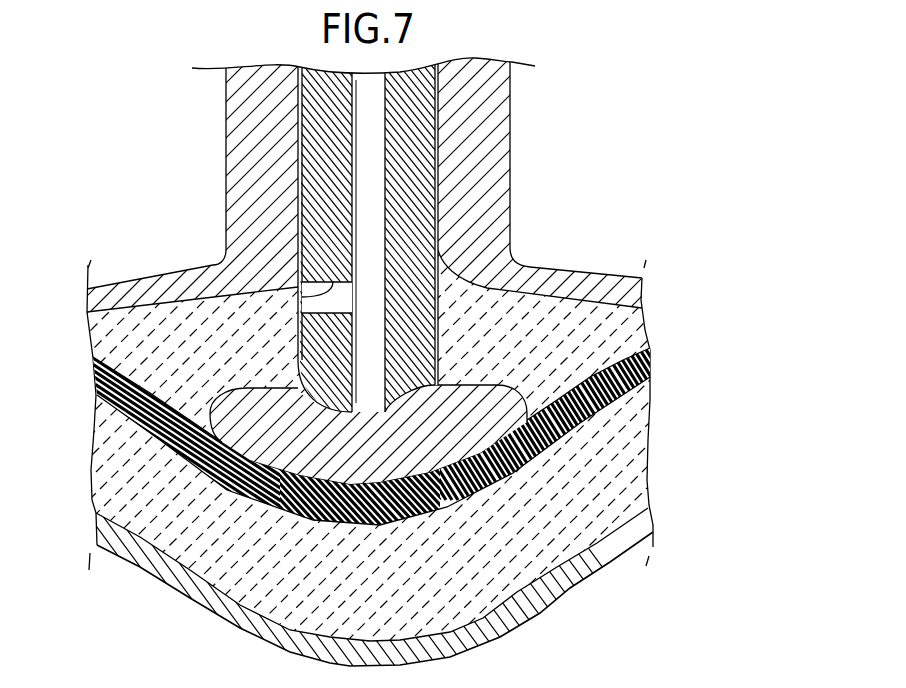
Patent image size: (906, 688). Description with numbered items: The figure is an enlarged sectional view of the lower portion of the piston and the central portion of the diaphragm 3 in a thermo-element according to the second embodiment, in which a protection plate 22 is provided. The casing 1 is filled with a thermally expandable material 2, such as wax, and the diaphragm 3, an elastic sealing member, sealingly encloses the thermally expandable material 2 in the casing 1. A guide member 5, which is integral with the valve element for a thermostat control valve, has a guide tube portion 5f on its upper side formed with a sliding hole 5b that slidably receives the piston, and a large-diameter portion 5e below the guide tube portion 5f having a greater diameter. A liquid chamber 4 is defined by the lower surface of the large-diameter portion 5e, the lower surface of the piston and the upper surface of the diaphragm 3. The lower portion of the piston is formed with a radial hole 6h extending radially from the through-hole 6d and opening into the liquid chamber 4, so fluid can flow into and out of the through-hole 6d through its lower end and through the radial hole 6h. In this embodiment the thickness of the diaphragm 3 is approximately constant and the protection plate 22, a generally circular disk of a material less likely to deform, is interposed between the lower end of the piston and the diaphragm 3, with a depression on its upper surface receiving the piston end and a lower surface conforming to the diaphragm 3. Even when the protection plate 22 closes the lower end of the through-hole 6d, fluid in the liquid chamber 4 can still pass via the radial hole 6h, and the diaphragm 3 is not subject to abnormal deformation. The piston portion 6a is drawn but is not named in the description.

The casing 1 is at (533, 605).
The thermally expandable material 2 is at (618, 462).
The diaphragm 3 is at (630, 370).
The liquid chamber 4 is at (470, 320).
The guide member 5 is at (453, 265).
The sliding hole 5b is at (436, 170).
The large-diameter portion 5e is at (587, 276).
The guide tube portion 5f is at (512, 97).
The insertion tube 6a is at (323, 217).
The through-hole 6d is at (383, 161).
The radial hole 6h is at (300, 291).
The protection plate 22 is at (293, 422).